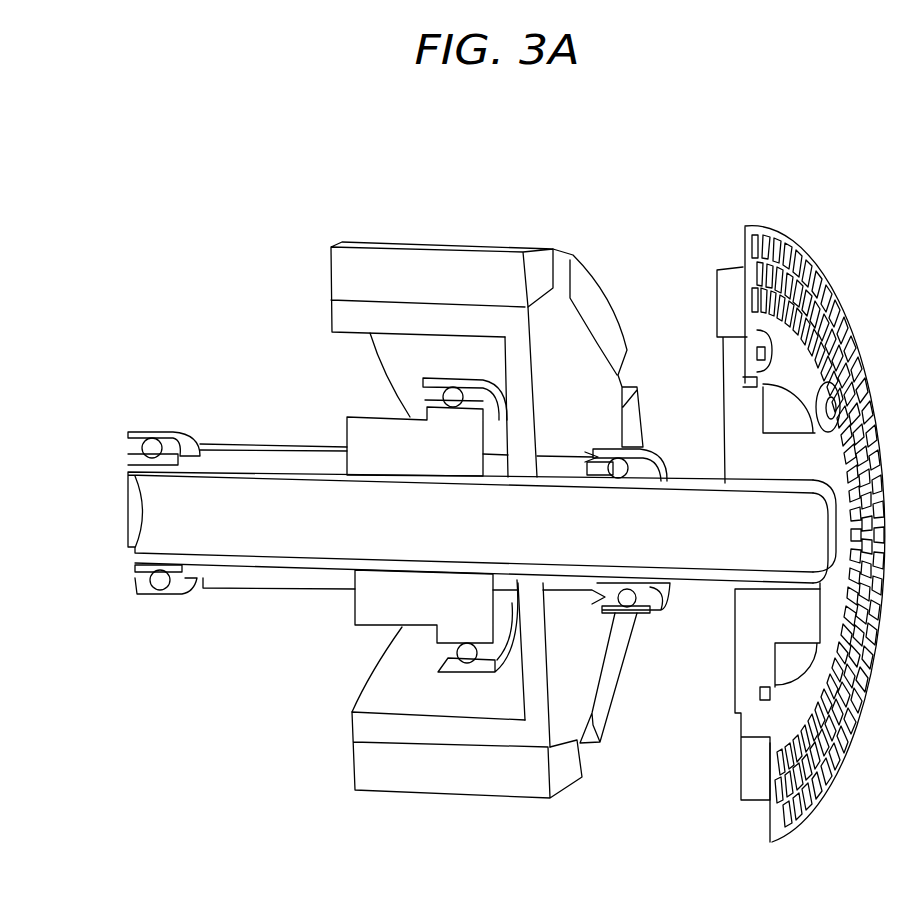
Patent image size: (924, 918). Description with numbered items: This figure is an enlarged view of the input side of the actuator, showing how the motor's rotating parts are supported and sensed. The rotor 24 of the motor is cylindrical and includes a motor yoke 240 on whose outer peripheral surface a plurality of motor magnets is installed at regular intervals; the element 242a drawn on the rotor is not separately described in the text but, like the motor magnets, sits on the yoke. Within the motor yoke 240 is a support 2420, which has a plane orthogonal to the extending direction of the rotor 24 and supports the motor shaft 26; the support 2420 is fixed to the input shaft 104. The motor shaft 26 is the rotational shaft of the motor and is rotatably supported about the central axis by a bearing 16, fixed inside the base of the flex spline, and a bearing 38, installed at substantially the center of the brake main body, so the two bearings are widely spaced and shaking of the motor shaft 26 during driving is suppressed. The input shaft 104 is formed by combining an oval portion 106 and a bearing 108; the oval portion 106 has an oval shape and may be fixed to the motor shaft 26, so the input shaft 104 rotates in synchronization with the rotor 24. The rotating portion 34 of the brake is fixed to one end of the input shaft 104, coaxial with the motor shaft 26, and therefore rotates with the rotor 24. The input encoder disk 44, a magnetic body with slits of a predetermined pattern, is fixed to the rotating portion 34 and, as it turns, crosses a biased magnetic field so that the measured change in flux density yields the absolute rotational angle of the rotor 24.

The rotor 24 is at (398, 212).
The upper arm of frame 242a is at (496, 248).
The support 2420 is at (523, 377).
The motor yoke 240 is at (465, 735).
The motor shaft 26 is at (231, 583).
The bearing 16 is at (145, 592).
The input shaft 104 is at (283, 622).
The oval portion 106 is at (376, 625).
The bearing 108 is at (440, 663).
The bearing 38 is at (640, 613).
The rotating portion 34 is at (726, 266).
The input encoder disk 44 is at (790, 222).